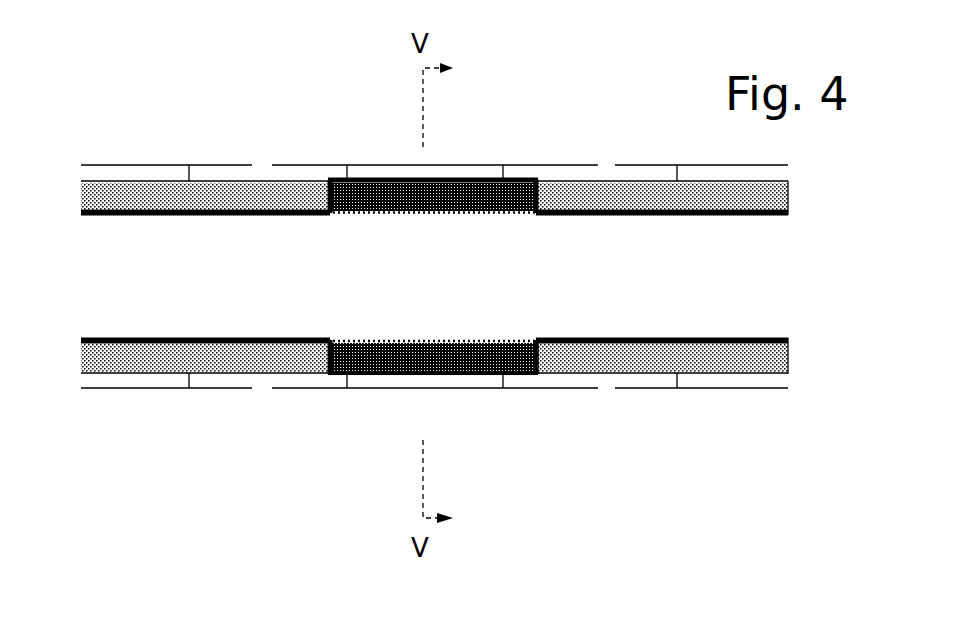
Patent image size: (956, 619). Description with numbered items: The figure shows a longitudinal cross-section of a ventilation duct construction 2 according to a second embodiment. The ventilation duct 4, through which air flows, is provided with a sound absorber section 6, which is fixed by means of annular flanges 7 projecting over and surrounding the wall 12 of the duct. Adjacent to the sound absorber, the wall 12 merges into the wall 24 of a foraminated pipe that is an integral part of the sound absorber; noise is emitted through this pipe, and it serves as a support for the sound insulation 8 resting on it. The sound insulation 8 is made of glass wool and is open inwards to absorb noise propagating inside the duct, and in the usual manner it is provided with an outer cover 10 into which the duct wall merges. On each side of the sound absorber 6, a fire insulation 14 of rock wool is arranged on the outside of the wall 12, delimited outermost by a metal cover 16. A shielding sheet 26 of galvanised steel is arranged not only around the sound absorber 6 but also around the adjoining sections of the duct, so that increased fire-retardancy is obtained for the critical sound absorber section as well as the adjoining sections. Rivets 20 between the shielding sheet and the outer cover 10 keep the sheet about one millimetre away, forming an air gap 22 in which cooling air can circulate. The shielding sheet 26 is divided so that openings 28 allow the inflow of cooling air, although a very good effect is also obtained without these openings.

The ventilation duct construction 2 is at (124, 61).
The ventilation duct 4 is at (170, 282).
The sound absorber section 6 is at (473, 164).
The annular flanges 7 is at (328, 182).
The sound insulation 8 is at (513, 202).
The outer cover 10 is at (522, 373).
The wall 12 is at (713, 337).
The fire insulation 14 is at (185, 362).
The metal cover 16 is at (252, 373).
The rivets 20 is at (189, 181).
The air gap 22 is at (485, 387).
The wall of foraminated pipe 24 is at (397, 335).
The shielding sheet 26 is at (395, 164).
The openings 28 is at (263, 165).